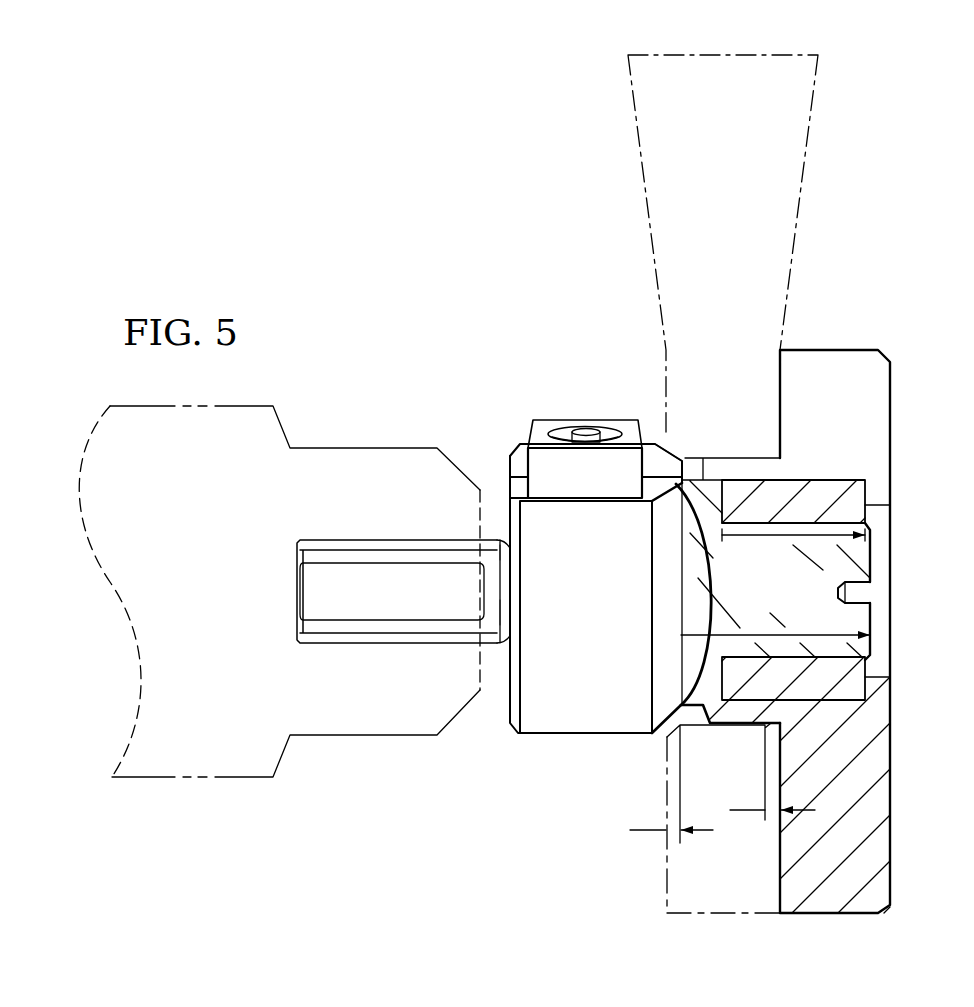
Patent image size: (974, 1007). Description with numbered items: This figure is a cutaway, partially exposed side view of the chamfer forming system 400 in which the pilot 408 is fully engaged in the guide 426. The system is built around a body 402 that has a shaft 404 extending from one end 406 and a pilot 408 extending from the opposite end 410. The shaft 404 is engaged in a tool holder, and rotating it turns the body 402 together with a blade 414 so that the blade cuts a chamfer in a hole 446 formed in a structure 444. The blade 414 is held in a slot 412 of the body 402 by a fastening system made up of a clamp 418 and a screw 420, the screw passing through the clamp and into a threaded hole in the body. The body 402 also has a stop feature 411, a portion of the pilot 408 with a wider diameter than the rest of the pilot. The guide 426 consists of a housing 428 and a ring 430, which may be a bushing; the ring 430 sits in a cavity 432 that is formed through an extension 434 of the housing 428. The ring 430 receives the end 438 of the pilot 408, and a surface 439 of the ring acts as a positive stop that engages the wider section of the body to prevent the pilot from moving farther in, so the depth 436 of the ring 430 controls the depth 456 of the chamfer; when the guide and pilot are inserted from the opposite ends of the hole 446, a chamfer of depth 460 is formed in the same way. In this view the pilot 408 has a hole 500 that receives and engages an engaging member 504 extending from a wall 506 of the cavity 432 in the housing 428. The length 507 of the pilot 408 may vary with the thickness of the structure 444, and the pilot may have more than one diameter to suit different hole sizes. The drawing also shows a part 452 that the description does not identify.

The chamfer forming system 400 is at (471, 267).
The body 402 is at (578, 733).
The shaft 404 is at (352, 540).
The end 406 is at (508, 537).
The pilot 408 is at (690, 552).
The end 410 is at (655, 737).
The stop feature 411 is at (688, 705).
The slot 412 is at (521, 444).
The blade 414 is at (655, 444).
The clamp 418 is at (573, 427).
The screw 420 is at (600, 428).
The guide 426 is at (886, 352).
The housing 428 is at (842, 350).
The ring 430 is at (840, 480).
The cavity 432 is at (872, 682).
The extension 434 is at (676, 457).
The depth 436 is at (750, 540).
The end 438 is at (871, 540).
The surface 439 is at (727, 495).
The structure 444 is at (702, 199).
The hole 446 is at (716, 478).
The drive housing 452 is at (172, 522).
The depth 456 is at (632, 830).
The depth 460 is at (738, 810).
The hole 500 is at (838, 593).
The engaging member 504 is at (873, 567).
The wall 506 is at (873, 650).
The length 507 is at (855, 633).